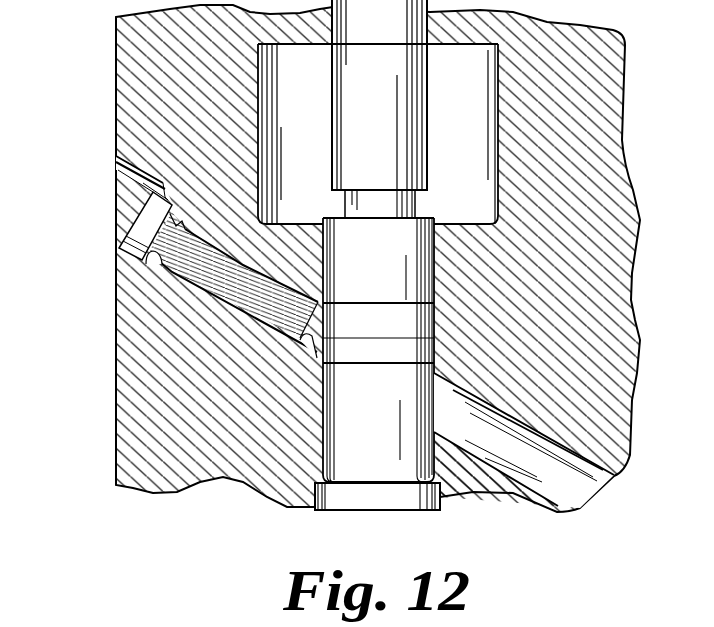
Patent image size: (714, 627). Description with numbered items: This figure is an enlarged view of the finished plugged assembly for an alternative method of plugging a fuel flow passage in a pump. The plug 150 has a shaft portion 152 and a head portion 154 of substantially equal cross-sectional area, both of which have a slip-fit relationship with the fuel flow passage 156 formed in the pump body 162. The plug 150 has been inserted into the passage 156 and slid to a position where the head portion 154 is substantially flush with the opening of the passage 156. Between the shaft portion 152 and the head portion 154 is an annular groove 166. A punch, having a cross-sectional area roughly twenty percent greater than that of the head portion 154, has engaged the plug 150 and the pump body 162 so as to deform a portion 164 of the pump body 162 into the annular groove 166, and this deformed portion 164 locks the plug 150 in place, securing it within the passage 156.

The plug 150 is at (200, 298).
The shaft portion 152 is at (248, 265).
The head portion 154 is at (165, 222).
The fuel flow passage 156 is at (306, 338).
The pump body 162 is at (150, 415).
The deformed portion 164 is at (181, 217).
The annular groove 166 is at (156, 260).